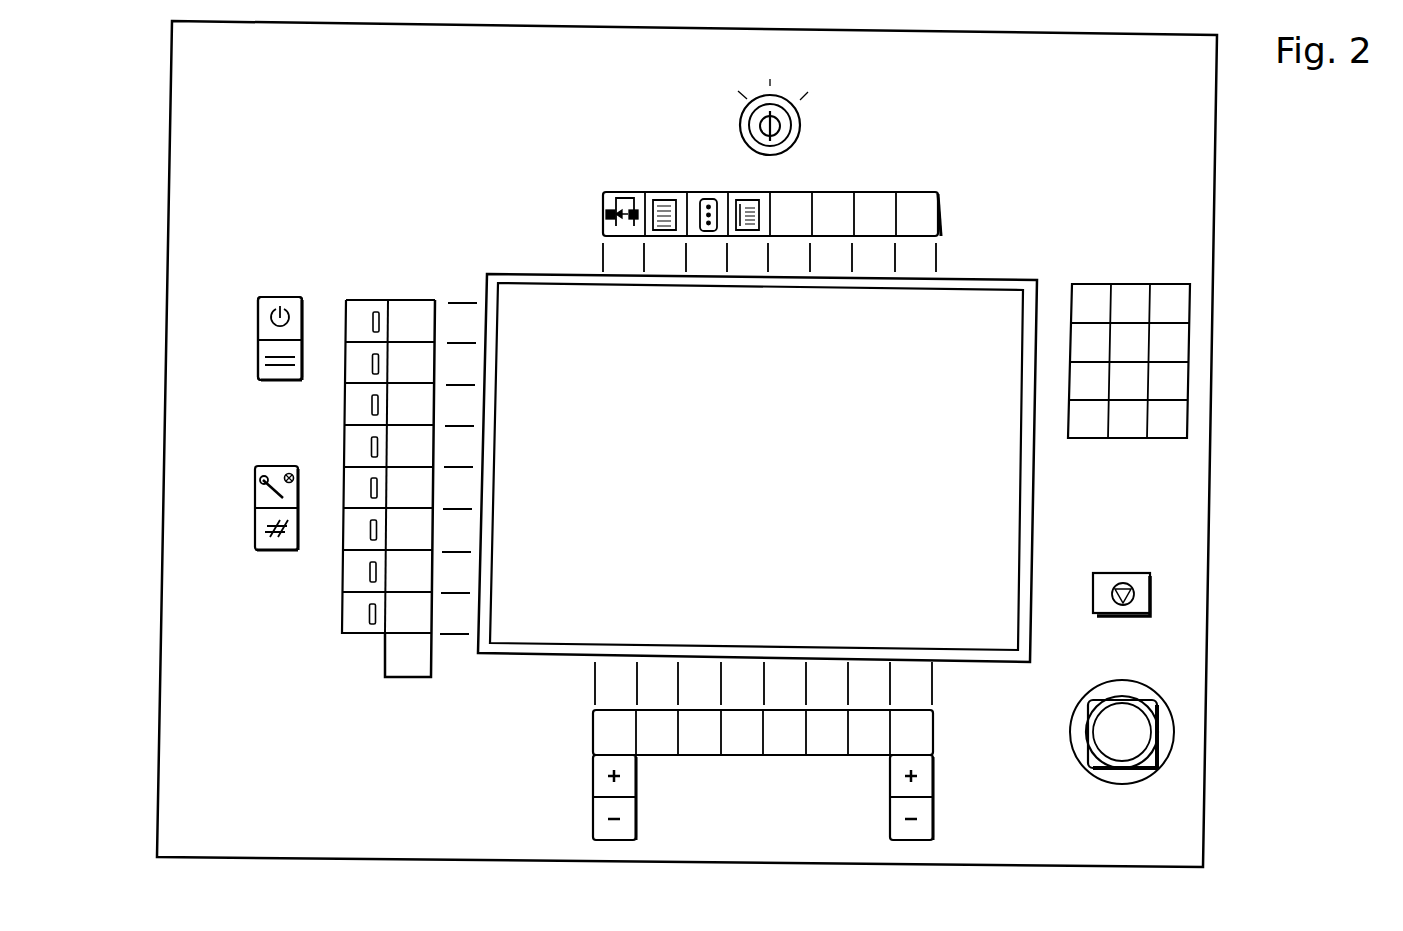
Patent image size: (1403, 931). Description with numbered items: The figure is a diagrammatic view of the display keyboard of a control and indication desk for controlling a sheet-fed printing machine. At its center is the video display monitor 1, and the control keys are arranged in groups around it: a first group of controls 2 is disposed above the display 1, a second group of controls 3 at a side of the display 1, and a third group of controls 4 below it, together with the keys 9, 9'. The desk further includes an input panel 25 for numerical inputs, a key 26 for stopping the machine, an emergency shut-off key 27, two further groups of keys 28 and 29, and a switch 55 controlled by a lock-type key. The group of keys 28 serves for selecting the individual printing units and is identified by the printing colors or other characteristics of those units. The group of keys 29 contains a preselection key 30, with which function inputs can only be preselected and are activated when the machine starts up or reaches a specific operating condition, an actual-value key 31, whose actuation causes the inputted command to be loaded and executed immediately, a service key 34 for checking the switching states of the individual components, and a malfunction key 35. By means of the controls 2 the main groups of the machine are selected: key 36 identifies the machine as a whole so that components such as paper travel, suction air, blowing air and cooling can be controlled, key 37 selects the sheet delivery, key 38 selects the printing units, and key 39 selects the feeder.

The video display monitor 1 is at (987, 303).
The first group of controls 2 is at (968, 195).
The second group of controls 3 is at (423, 258).
The third group of controls 4 is at (965, 732).
The key 9 is at (653, 797).
The key 9' is at (870, 797).
The input panel 25 is at (1150, 256).
The enter key 26 is at (1143, 582).
The rotary knob 27 is at (1138, 692).
The group of keys 28 is at (356, 275).
The group of keys 29 is at (273, 272).
The preselection key 30 is at (265, 314).
The actual-value key 31 is at (262, 348).
The service key 34 is at (262, 497).
The malfunction key 35 is at (260, 540).
The key 36 is at (610, 197).
The key 37 is at (662, 197).
The key 38 is at (713, 195).
The key 39 is at (748, 197).
The switch 55 is at (797, 122).